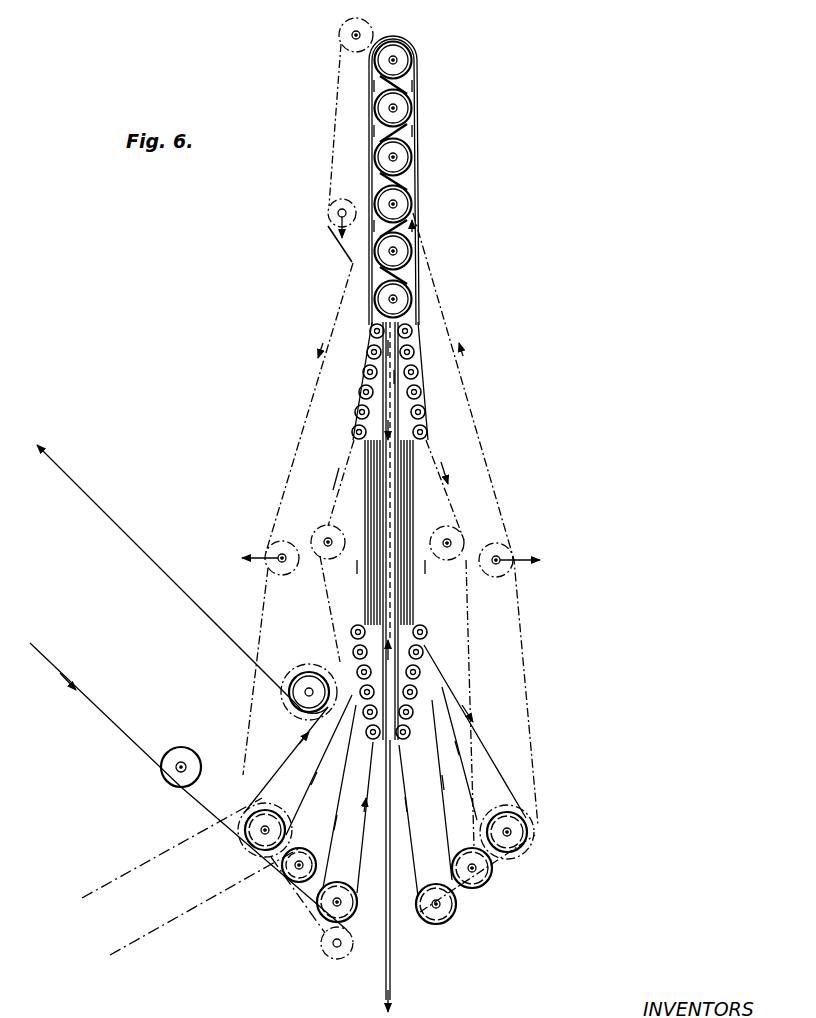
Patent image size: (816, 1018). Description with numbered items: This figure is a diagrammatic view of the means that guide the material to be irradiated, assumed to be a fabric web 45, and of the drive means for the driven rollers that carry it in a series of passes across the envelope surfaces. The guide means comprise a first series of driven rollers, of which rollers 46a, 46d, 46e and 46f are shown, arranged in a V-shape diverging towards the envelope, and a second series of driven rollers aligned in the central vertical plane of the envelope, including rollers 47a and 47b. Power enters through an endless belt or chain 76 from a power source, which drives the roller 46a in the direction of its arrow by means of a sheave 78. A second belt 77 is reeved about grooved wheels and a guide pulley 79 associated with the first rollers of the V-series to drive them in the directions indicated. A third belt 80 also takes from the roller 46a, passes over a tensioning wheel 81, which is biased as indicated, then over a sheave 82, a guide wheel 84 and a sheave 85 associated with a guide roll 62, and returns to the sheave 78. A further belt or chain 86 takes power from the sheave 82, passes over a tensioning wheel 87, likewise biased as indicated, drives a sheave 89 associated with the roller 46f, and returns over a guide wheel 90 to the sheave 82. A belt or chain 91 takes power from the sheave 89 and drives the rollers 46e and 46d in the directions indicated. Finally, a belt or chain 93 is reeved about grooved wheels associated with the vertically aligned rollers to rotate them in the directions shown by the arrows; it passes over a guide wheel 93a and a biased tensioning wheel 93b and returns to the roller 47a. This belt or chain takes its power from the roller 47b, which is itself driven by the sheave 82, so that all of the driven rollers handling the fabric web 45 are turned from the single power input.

The fabric web 45 is at (104, 716).
The driven roller 46a is at (250, 822).
The driven roller 46d is at (441, 925).
The driven roller 46e is at (492, 882).
The driven roller 46f is at (511, 853).
The driven roller 47a is at (400, 297).
The driven roller 47b is at (400, 250).
The guide roll 62 is at (293, 709).
The endless belt or chain 76 is at (182, 915).
The second belt 77 is at (285, 876).
The sheave 78 is at (243, 841).
The guide pulley 79 is at (322, 950).
The third belt 80 is at (243, 712).
The tensioning wheel 81 is at (285, 572).
The sheave 82 is at (414, 240).
The guide wheel 84 is at (334, 528).
The sheave 85 is at (318, 666).
The belt or chain 86 is at (477, 432).
The tensioning wheel 87 is at (494, 578).
The sheave 89 is at (536, 841).
The guide wheel 90 is at (443, 559).
The belt or chain 91 is at (460, 892).
The belt or chain 93 is at (326, 186).
The guide wheel 93a is at (373, 31).
The tensioning wheel 93b is at (336, 213).